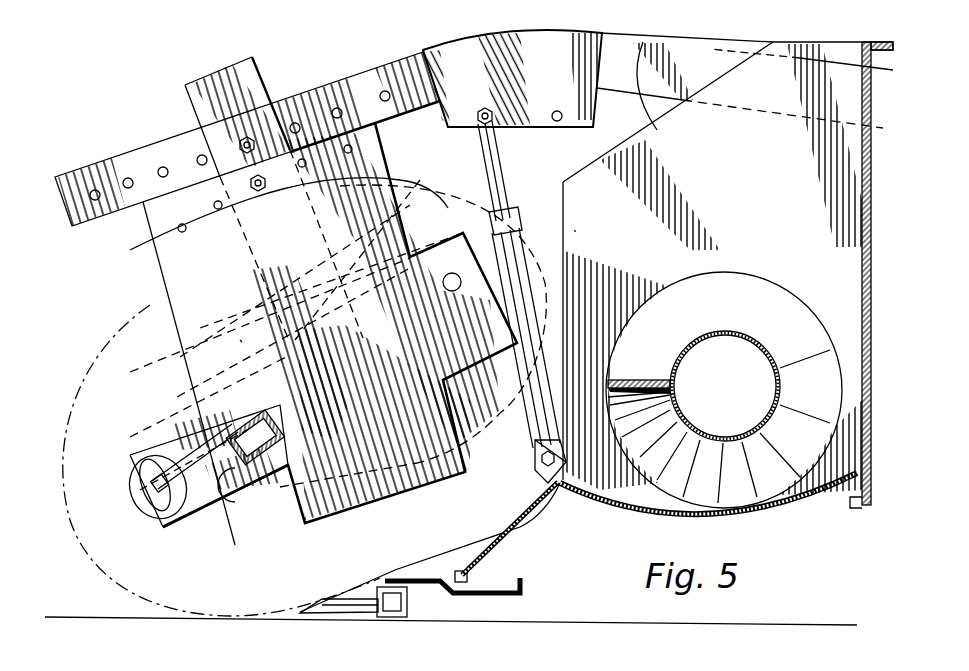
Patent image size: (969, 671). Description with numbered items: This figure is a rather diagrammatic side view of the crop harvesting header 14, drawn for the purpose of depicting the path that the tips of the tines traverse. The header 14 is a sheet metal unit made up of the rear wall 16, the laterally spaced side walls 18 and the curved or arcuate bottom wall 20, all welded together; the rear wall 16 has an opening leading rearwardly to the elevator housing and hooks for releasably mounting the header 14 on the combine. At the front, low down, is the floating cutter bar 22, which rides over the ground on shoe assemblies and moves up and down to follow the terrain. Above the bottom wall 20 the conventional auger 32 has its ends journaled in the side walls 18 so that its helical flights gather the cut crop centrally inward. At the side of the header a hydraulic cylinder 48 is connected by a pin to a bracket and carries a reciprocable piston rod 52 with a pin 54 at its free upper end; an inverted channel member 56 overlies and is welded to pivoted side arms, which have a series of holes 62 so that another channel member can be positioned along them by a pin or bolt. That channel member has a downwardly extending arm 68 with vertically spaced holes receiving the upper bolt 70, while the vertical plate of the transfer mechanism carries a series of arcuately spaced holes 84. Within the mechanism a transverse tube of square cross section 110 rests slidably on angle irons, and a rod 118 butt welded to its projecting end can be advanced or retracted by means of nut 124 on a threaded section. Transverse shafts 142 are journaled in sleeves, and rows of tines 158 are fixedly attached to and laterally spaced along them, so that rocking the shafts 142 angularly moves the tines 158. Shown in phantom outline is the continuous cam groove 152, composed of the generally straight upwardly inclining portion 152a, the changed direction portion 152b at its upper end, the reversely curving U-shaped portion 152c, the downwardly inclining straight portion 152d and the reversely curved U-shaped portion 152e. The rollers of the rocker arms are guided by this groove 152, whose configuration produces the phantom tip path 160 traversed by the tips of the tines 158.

The harvesting header 14 is at (793, 35).
The rear wall 16 is at (872, 250).
The side walls 18 is at (640, 50).
The bottom wall 20 is at (783, 507).
The floating cutter bar 22 is at (328, 616).
The auger 32 is at (732, 268).
The hydraulic cylinder 48 is at (535, 366).
The piston rod 52 is at (498, 162).
The pin 54 is at (485, 107).
The inverted channel member 56 is at (478, 52).
The holes 62 is at (122, 178).
The downwardly extending arm 68 is at (215, 75).
The upper bolt 70 is at (258, 191).
The arcuately spaced holes 84 is at (352, 149).
The square cross section tube 110 is at (226, 495).
The rod 118 is at (205, 483).
The nut 124 is at (140, 467).
The transverse shafts 142 is at (183, 527).
The cam groove 152 is at (170, 400).
The straight upwardly inclining portion 152a is at (363, 487).
The changed direction portion 152b is at (475, 398).
The reversely curving portion 152c is at (533, 252).
The downwardly inclining straight portion 152d is at (237, 343).
The reversely curved portion 152e is at (142, 424).
The tines 158 is at (207, 578).
The tip path 160 is at (85, 372).